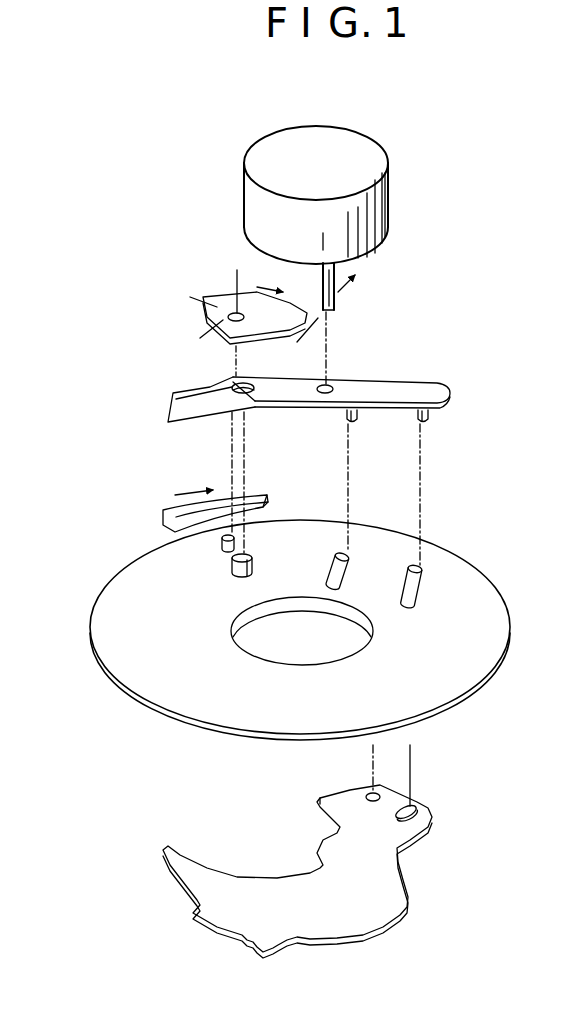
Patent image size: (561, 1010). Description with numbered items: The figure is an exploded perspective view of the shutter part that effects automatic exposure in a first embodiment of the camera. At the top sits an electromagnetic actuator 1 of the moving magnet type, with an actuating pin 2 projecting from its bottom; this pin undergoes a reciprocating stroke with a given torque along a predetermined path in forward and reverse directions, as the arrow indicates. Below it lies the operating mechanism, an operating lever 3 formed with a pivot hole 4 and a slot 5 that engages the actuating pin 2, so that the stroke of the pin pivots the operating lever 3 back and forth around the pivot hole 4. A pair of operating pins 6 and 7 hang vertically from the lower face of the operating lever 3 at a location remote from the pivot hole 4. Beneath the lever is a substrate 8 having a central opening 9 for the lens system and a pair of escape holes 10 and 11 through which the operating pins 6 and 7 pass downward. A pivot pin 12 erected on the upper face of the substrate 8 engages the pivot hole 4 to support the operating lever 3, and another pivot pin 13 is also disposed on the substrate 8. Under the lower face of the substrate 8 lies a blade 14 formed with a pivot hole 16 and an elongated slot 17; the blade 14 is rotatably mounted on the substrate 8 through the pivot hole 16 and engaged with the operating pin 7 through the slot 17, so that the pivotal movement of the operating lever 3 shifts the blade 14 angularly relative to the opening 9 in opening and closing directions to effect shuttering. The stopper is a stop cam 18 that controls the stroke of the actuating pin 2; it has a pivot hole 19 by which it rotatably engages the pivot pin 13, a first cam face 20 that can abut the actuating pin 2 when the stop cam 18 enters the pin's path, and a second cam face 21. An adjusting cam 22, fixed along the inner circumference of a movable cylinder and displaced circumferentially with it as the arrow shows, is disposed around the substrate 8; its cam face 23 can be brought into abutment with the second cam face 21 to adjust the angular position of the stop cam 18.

The electromagnetic actuator 1 is at (382, 190).
The actuating pin 2 is at (340, 290).
The operating lever 3 is at (447, 393).
The pivot hole 4 is at (233, 386).
The slot 5 is at (328, 384).
The operating pin 6 is at (343, 413).
The operating pin 7 is at (428, 418).
The substrate 8 is at (503, 598).
The central opening 9 is at (373, 630).
The escape hole 10 is at (350, 552).
The escape hole 11 is at (421, 587).
The pivot pin 12 is at (230, 568).
The pivot pin 13 is at (222, 547).
The blade 14 is at (403, 915).
The pivot hole 16 is at (383, 790).
The elongated slot 17 is at (413, 815).
The stop cam 18 is at (155, 305).
The pivot hole 19 is at (178, 336).
The first cam face 20 is at (305, 328).
The second cam face 21 is at (218, 293).
The adjusting cam 22 is at (163, 520).
The cam face 23 is at (263, 508).